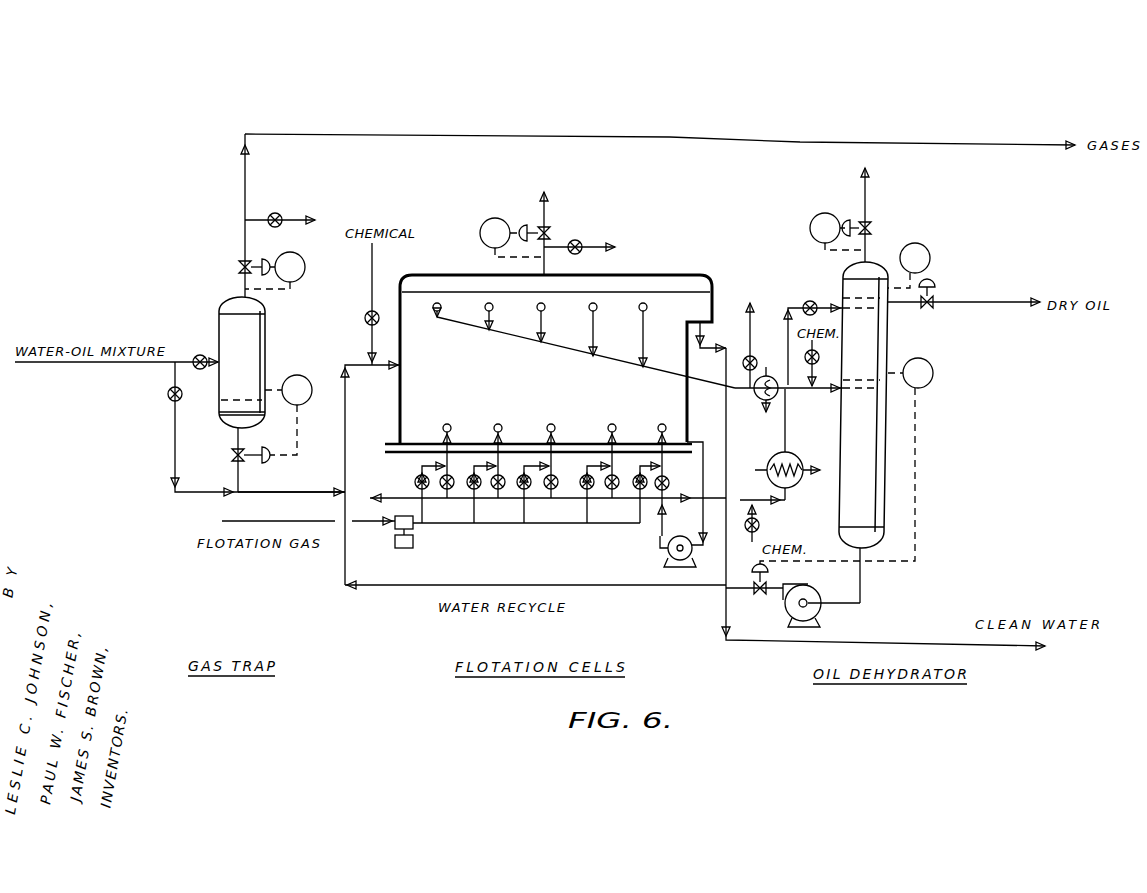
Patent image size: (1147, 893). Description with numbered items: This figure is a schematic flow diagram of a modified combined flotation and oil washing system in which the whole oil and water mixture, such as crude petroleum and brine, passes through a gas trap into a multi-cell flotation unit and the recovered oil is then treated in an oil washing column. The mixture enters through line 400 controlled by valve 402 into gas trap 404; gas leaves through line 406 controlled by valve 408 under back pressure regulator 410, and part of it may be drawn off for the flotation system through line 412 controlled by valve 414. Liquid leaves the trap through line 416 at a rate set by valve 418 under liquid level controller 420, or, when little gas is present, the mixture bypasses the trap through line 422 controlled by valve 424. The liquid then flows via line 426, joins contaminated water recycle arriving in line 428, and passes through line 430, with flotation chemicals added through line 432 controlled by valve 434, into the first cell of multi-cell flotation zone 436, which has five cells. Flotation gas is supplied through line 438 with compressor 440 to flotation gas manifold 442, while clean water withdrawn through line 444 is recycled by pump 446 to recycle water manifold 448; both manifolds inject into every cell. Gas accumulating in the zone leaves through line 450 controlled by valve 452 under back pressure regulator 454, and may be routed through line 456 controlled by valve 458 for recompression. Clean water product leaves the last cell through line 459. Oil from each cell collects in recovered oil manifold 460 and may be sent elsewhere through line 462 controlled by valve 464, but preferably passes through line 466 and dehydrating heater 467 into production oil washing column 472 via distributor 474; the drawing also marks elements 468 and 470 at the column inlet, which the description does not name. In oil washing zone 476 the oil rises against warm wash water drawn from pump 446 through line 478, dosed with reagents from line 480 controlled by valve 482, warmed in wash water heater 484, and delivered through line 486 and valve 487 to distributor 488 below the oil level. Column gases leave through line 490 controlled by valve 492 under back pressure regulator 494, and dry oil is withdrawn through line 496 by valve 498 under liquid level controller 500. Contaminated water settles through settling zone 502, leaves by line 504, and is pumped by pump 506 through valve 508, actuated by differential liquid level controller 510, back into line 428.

The line 400 is at (110, 364).
The valve 402 is at (200, 355).
The gas trap 404 is at (265, 314).
The line 406 is at (242, 292).
The valve 408 is at (238, 270).
The back pressure regulator 410 is at (303, 268).
The line 412 is at (248, 218).
The valve 414 is at (285, 216).
The line 416 is at (236, 440).
The valve 418 is at (236, 461).
The liquid level controller 420 is at (302, 376).
The line 422 is at (172, 450).
The valve 424 is at (168, 398).
The line 426 is at (322, 490).
The line 428 is at (325, 572).
The line 430 is at (348, 402).
The line 432 is at (370, 280).
The valve 434 is at (366, 322).
The multi-cell flotation zone 436 is at (548, 402).
The line 438 is at (232, 521).
The compressor 440 is at (415, 542).
The flotation gas manifold 442 is at (508, 525).
The line 444 is at (703, 478).
The pump 446 is at (670, 578).
The recycle water manifold 448 is at (568, 522).
The line 450 is at (550, 212).
The valve 452 is at (552, 232).
The back pressure regulator 454 is at (505, 218).
The line 456 is at (608, 246).
The valve 458 is at (580, 253).
The line 459 is at (752, 332).
The recovered oil manifold 460 is at (470, 338).
The line 462 is at (735, 385).
The valve 464 is at (743, 364).
The line 466 is at (795, 392).
The dehydrating heater 467 is at (764, 412).
The oil-water interface level 468 is at (845, 312).
The chemical valve 470 is at (820, 360).
The production oil washing column 472 is at (875, 270).
The distributor 474 is at (862, 392).
The oil washing zone 476 is at (868, 364).
The line 478 is at (667, 504).
The line 480 is at (762, 540).
The valve 482 is at (764, 522).
The wash water heater 484 is at (795, 458).
The line 486 is at (792, 306).
The valve 487 is at (813, 300).
The distributor 488 is at (890, 312).
The line 490 is at (875, 244).
The valve 492 is at (875, 226).
The back pressure regulator 494 is at (835, 195).
The line 496 is at (990, 310).
The valve 498 is at (936, 298).
The liquid level controller 500 is at (930, 256).
The settling zone 502 is at (855, 487).
The line 504 is at (862, 598).
The pump 506 is at (803, 625).
The valve 508 is at (760, 598).
The differential liquid level controller 510 is at (934, 376).